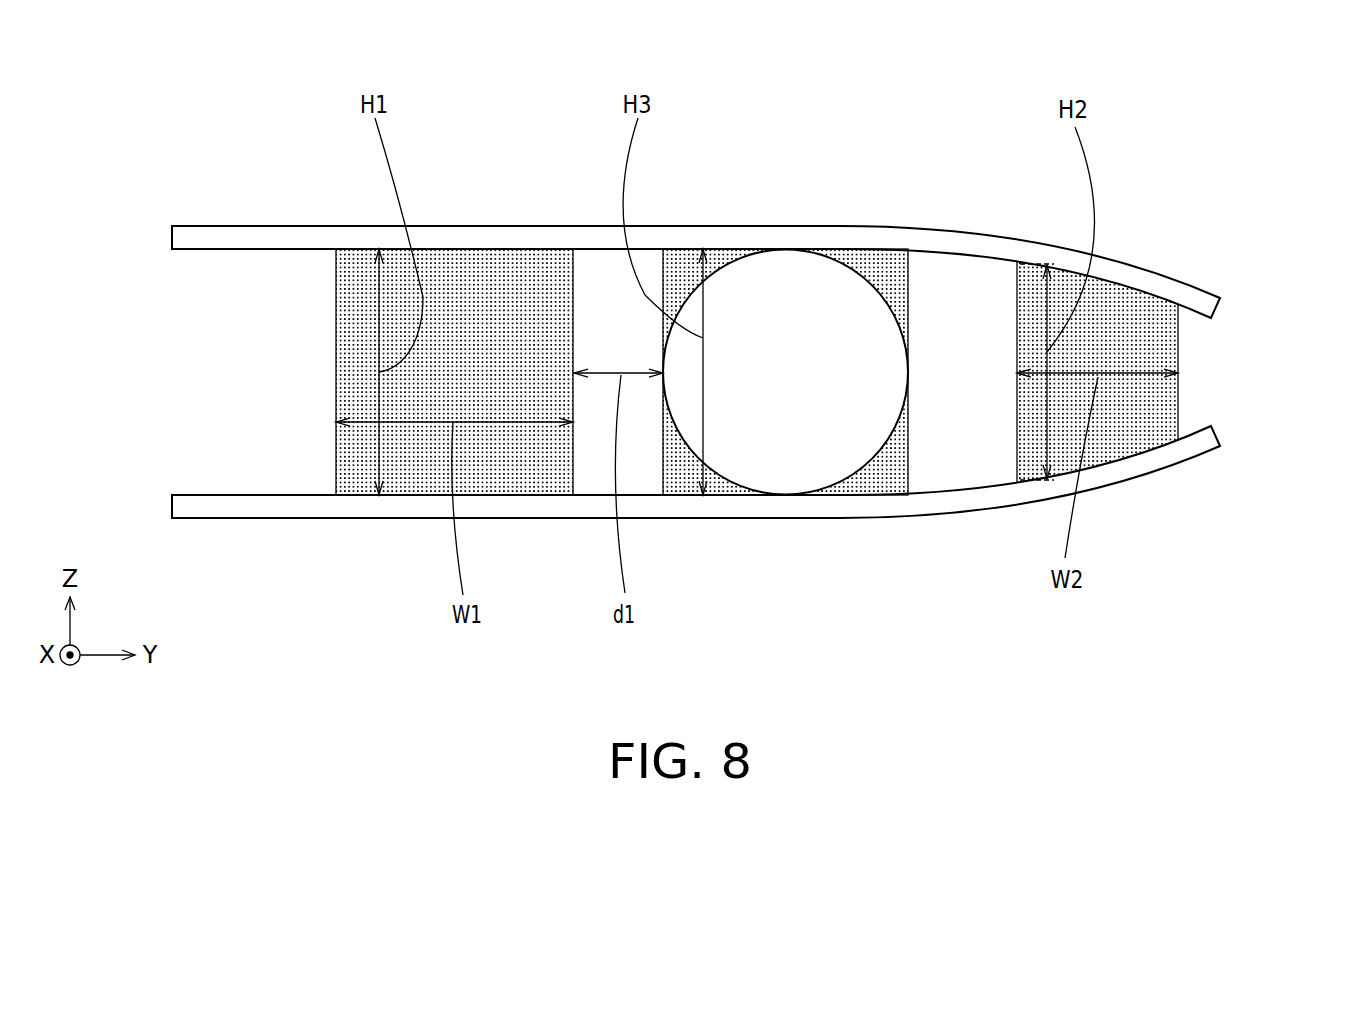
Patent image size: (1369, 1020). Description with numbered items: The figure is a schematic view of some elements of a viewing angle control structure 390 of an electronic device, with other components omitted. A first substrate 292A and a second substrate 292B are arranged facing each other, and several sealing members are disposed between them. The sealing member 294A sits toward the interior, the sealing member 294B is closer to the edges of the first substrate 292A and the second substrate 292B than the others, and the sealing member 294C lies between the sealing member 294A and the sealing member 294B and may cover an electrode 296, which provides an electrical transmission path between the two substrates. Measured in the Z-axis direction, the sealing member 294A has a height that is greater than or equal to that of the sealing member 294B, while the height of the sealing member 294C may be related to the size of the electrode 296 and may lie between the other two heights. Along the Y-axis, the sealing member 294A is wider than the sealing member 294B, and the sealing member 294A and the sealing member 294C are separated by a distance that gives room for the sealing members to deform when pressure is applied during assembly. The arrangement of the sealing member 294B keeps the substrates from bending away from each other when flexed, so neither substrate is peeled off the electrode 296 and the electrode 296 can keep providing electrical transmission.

The first substrate 292A is at (1143, 477).
The second substrate 292B is at (1182, 282).
The sealing member 294A is at (493, 302).
The sealing member 294B is at (1123, 350).
The sealing member 294C is at (680, 265).
The electrode 296 is at (782, 318).
The assembly 390 is at (769, 374).